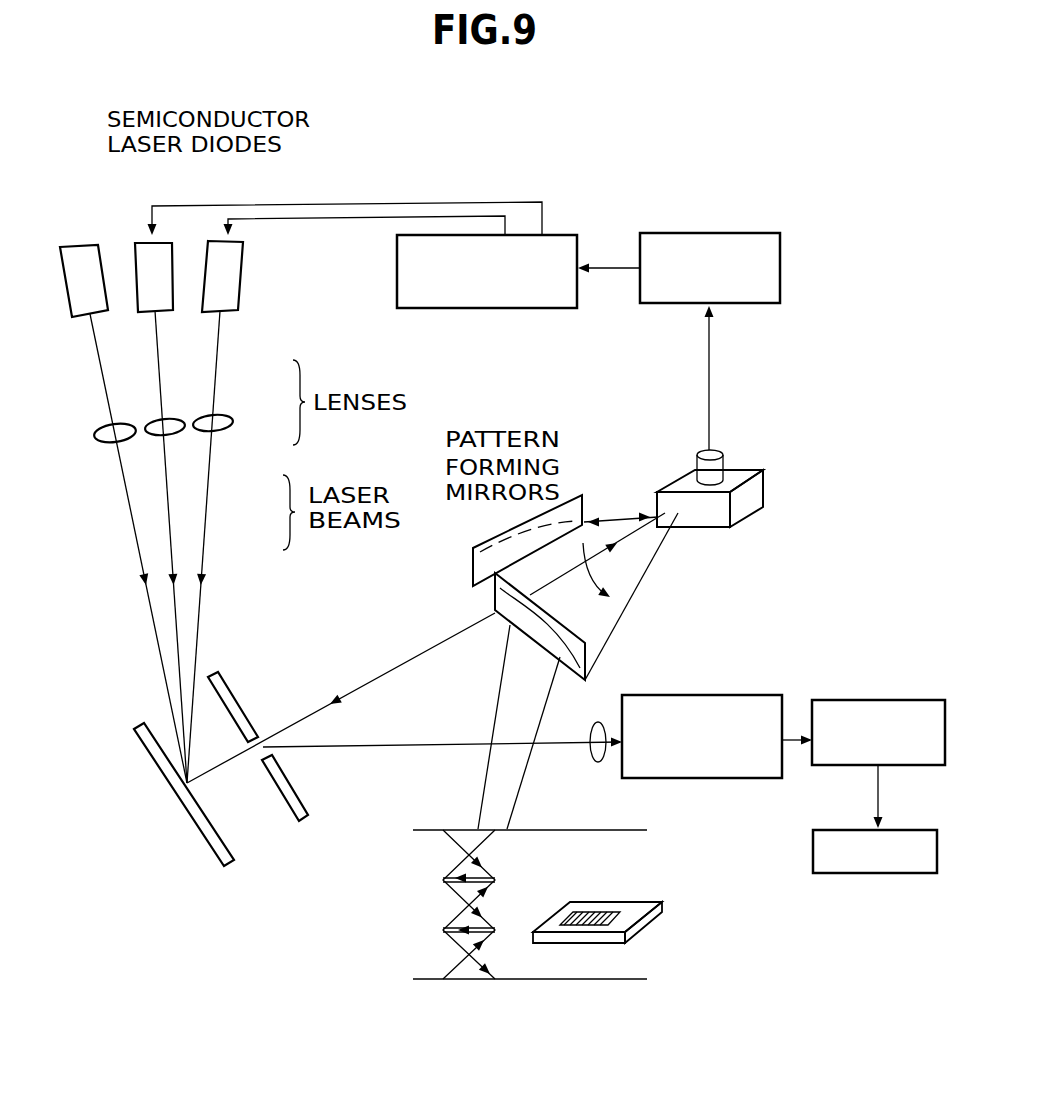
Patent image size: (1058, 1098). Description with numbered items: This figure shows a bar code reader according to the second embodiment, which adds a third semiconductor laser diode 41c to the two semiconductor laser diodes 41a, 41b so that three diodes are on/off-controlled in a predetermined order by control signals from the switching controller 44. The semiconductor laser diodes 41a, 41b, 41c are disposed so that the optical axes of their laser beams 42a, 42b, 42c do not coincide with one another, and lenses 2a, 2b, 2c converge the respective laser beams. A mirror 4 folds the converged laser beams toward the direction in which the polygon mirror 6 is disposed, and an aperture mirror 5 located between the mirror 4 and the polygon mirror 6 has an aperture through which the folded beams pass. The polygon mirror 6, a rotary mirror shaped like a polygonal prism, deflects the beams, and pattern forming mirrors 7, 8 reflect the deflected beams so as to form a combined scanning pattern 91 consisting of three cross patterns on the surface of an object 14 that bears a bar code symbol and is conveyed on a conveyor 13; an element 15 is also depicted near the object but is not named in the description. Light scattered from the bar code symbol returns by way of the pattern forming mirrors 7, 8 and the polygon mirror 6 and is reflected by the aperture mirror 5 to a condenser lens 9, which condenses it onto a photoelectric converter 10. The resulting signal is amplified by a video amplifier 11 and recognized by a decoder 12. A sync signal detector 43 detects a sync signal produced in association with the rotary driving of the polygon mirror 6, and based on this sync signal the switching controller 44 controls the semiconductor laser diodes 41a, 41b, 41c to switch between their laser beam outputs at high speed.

The semiconductor laser diode 41a is at (243, 253).
The semiconductor laser diode 41b is at (172, 247).
The semiconductor laser diode 41c is at (98, 247).
The lens 2a is at (223, 417).
The lens 2b is at (180, 435).
The lens 2c is at (130, 440).
The laser beam 42a is at (210, 475).
The laser beam 42b is at (168, 503).
The laser beam 42c is at (135, 530).
The switching controller 44 is at (575, 243).
The sync signal detector 43 is at (707, 233).
The polygon mirror 6 is at (757, 495).
The pattern forming mirror 7 is at (532, 517).
The pattern forming mirror 8 is at (493, 603).
The mirror 4 is at (208, 840).
The aperture mirror 5 is at (287, 808).
The condenser lens 9 is at (605, 722).
The photoelectric converter 10 is at (733, 694).
The video amplifier 11 is at (865, 698).
The decoder 12 is at (865, 830).
The conveyor 13 is at (613, 979).
The object 14 is at (633, 935).
The bar code symbol 15 is at (592, 908).
The combined scanning pattern 91 is at (462, 977).